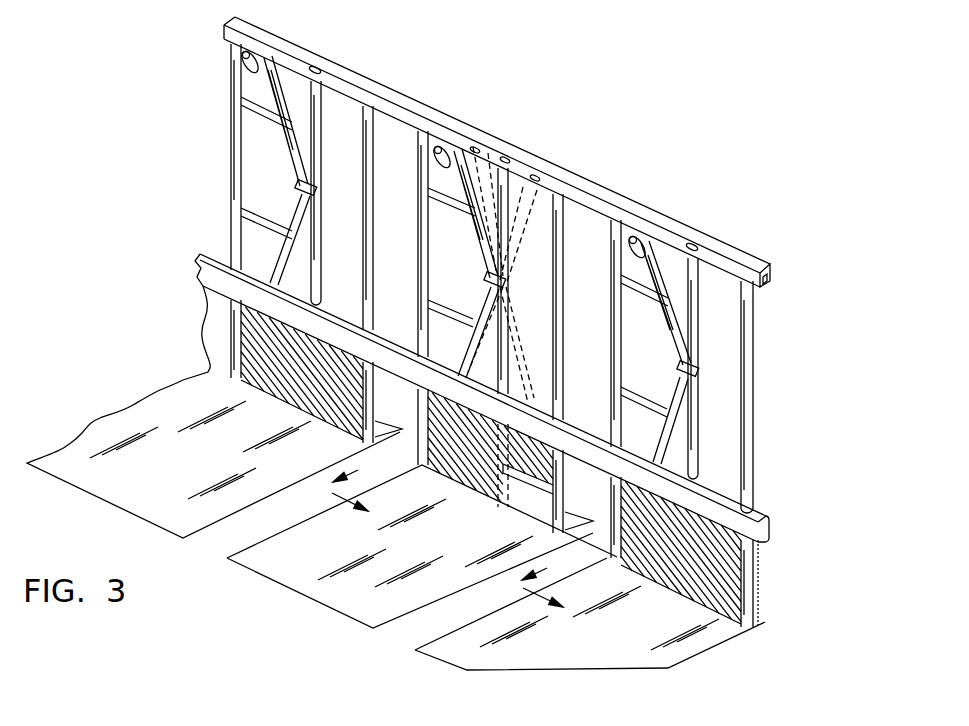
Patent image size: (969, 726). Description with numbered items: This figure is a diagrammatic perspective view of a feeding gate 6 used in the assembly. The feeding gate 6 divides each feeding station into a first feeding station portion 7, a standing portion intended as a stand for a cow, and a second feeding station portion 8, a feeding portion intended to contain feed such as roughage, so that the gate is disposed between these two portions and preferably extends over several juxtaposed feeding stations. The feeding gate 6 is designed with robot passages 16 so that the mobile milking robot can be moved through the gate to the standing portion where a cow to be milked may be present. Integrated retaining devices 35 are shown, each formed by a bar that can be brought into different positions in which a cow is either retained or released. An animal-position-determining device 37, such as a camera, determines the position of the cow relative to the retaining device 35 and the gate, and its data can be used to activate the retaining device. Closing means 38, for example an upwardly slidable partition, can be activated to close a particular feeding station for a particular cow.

The feeding gate 6 is at (780, 438).
The first feeding station portion 7 is at (152, 496).
The second feeding station portion 8 is at (380, 432).
The robot passage 16 is at (402, 447).
The retaining device 35 is at (313, 148).
The animal-position-determining device 37 is at (236, 50).
The closing means 38 is at (533, 498).